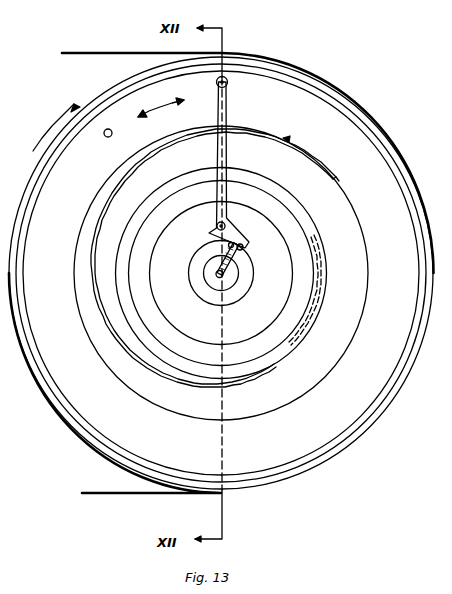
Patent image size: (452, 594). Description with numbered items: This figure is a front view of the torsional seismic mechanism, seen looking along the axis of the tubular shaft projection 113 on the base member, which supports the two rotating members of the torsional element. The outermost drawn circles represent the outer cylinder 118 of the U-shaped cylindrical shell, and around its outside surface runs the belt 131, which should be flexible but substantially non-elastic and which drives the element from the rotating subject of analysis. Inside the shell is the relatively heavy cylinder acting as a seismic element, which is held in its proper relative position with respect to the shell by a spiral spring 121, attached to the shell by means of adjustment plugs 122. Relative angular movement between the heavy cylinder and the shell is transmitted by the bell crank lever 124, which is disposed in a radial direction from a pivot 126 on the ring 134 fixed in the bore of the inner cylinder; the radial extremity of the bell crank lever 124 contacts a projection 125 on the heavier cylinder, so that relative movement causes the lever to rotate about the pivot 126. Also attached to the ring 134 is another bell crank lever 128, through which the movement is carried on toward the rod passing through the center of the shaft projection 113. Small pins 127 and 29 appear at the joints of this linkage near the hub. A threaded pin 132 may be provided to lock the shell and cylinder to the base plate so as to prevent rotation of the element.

The shaft projection 113 is at (208, 280).
The outer cylinder 118 is at (78, 428).
The spiral spring 121 is at (258, 379).
The adjustment plugs 122 is at (289, 194).
The bell crank lever 124 is at (229, 156).
The projection 125 is at (216, 83).
The pivot 126 is at (217, 230).
The pin 127 is at (244, 247).
The bell crank lever 128 is at (240, 265).
The pin 29 is at (227, 248).
The belt 131 is at (92, 36).
The threaded pin 132 is at (104, 137).
The ring 134 is at (266, 316).